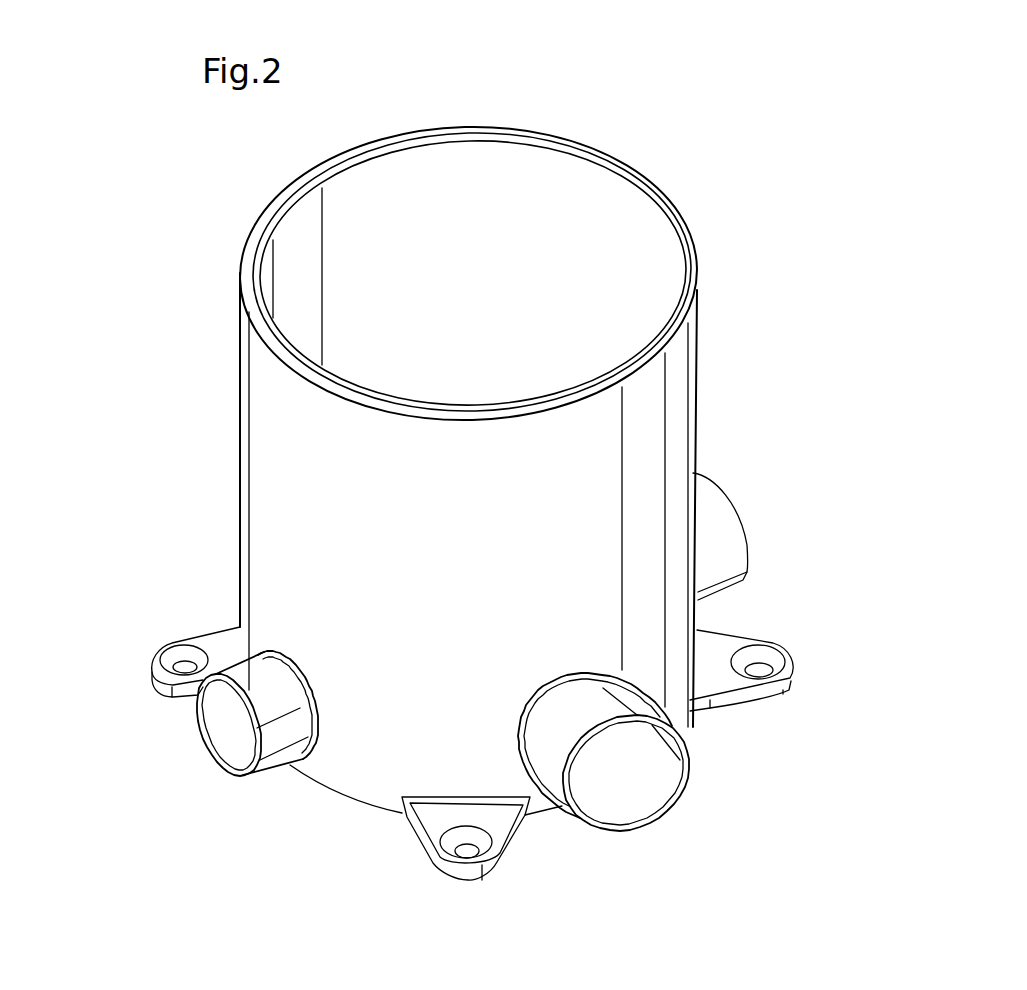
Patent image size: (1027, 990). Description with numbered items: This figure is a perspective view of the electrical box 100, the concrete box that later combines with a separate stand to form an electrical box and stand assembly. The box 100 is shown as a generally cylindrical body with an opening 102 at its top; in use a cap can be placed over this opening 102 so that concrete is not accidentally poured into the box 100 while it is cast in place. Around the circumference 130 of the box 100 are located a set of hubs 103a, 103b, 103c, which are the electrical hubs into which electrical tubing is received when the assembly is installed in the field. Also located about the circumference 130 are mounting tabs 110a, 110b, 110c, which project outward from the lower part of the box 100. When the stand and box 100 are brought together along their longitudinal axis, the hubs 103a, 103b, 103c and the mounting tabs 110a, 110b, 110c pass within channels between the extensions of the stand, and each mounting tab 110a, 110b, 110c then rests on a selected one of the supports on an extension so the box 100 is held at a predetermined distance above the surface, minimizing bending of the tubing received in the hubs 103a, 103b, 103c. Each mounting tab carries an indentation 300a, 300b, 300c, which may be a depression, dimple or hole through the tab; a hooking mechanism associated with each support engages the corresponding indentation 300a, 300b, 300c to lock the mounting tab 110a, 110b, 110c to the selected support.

The electrical box 100 is at (767, 313).
The opening 102 is at (486, 188).
The circumference 130 is at (720, 410).
The hub 103a is at (212, 763).
The hub 103b is at (665, 820).
The hub 103c is at (755, 477).
The mounting tab 110a is at (173, 648).
The mounting tab 110b is at (405, 852).
The mounting tab 110c is at (798, 682).
The indentation 300a is at (155, 665).
The indentation 300b is at (483, 852).
The indentation 300c is at (762, 664).